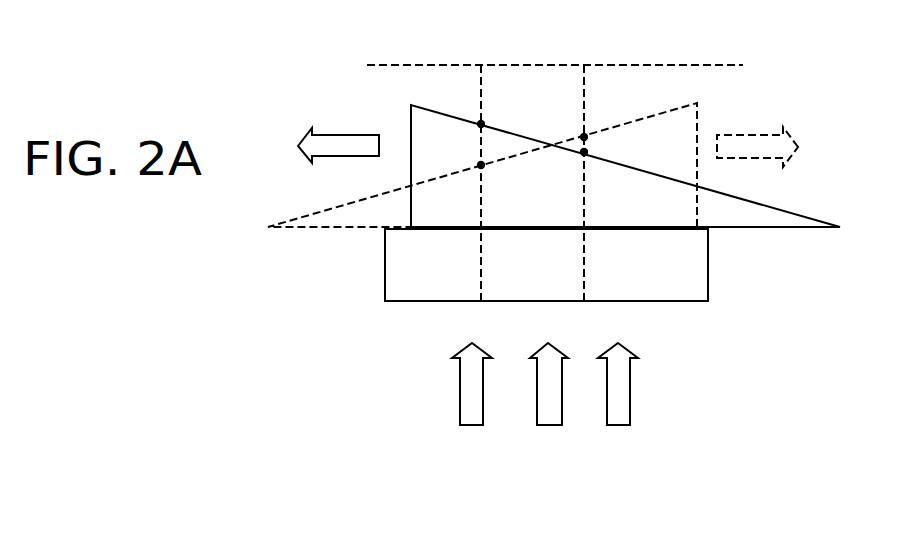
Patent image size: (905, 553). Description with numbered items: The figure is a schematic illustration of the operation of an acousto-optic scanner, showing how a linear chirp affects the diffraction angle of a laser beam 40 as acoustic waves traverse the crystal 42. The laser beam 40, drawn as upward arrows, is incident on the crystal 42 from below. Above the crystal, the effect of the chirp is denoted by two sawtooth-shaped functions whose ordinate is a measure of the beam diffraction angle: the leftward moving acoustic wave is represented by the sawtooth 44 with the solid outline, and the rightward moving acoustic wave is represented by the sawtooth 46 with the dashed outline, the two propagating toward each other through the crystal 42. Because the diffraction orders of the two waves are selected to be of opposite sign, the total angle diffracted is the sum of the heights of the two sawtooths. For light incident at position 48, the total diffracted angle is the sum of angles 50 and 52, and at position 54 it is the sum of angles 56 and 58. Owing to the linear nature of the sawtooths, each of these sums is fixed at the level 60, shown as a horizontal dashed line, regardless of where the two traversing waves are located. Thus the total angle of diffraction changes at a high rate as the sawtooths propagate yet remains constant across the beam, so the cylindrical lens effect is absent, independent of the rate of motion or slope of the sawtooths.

The laser beam 40 is at (545, 384).
The crystal 42 is at (708, 265).
The sawtooth of leftward moving wave 44 is at (345, 135).
The sawtooth of rightward moving wave 46 is at (756, 135).
The position 48 is at (478, 302).
The angle 50 is at (481, 166).
The angle 52 is at (483, 122).
The position 54 is at (585, 303).
The angle 56 is at (586, 136).
The angle 58 is at (585, 154).
The level 60 is at (390, 65).